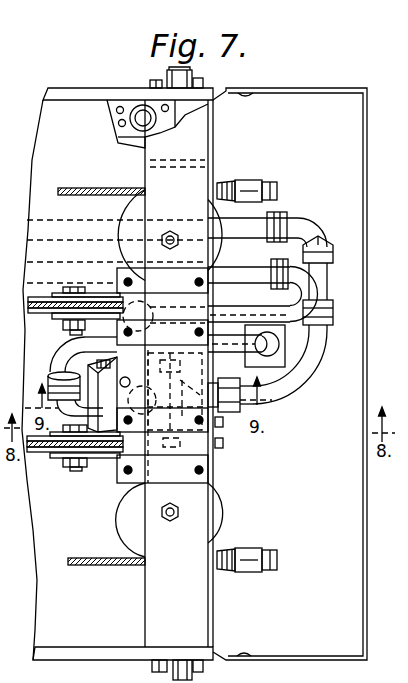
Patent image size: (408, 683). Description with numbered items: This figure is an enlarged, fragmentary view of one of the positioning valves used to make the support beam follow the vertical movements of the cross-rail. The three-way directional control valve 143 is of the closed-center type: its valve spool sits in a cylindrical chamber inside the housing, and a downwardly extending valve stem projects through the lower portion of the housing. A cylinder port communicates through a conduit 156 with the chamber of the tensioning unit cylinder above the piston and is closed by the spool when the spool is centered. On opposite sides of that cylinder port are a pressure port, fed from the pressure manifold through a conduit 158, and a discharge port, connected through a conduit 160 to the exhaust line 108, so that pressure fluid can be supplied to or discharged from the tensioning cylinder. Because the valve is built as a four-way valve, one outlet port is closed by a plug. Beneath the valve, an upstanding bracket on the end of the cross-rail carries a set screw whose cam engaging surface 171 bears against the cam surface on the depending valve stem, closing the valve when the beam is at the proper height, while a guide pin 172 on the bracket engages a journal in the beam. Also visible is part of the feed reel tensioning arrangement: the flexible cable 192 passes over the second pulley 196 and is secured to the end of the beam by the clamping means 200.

The exhaust line 108 is at (257, 226).
The three-way directional control valve 143 is at (118, 396).
The conduit 156 is at (74, 350).
The conduit 158 is at (283, 390).
The conduit 160 is at (333, 258).
The cam engaging surface 171 is at (128, 113).
The guide pin 172 is at (142, 123).
The flexible cable 192 is at (145, 190).
The second pulley 196 is at (127, 217).
The clamping means 200 is at (255, 183).